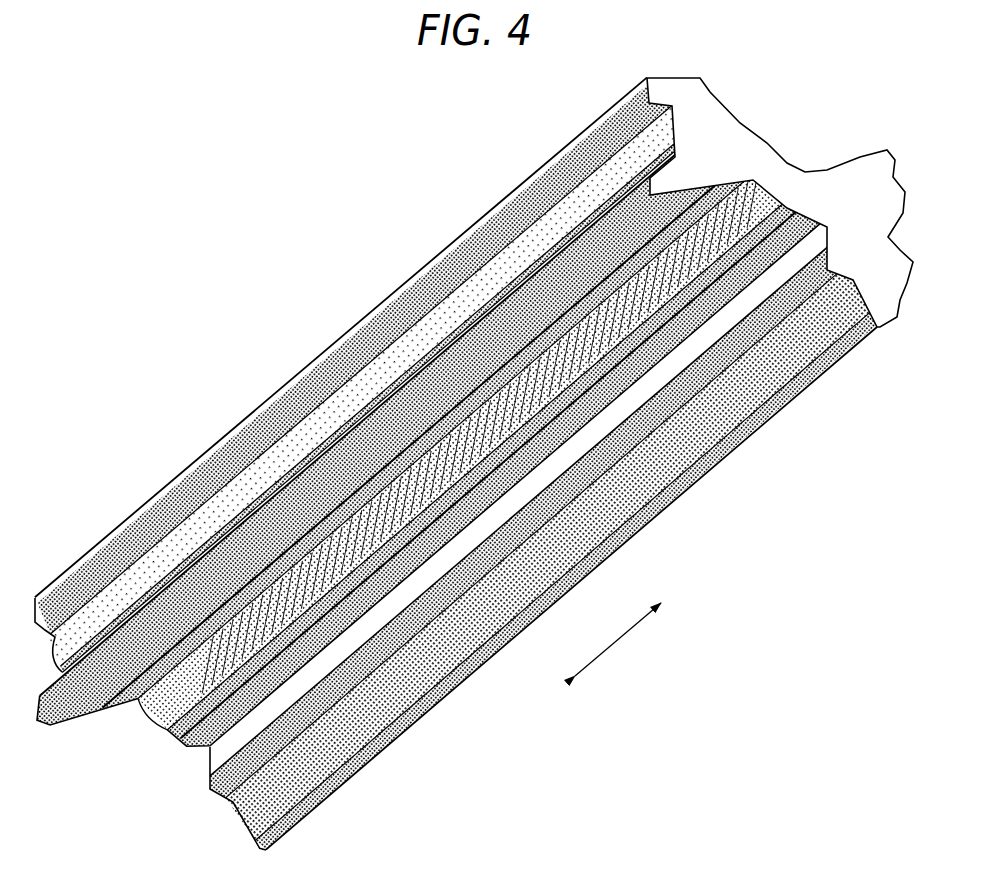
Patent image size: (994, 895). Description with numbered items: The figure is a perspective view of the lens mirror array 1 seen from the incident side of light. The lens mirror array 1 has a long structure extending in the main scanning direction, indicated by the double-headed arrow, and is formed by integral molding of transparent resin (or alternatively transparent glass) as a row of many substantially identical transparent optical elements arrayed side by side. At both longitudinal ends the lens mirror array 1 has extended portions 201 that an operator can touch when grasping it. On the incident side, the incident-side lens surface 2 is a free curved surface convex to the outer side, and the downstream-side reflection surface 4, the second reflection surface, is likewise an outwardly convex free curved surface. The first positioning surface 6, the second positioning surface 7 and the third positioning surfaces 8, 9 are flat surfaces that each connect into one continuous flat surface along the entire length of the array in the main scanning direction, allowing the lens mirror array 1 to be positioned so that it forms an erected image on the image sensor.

The lens mirror array 1 is at (302, 258).
The incident-side lens surface 2 is at (158, 565).
The downstream-side reflection surface 4 is at (300, 607).
The first positioning surface 6 is at (598, 280).
The second positioning surface 7 is at (688, 338).
The third positioning surface 8 is at (268, 505).
The third positioning surface 9 is at (450, 575).
The extended portion 201 is at (80, 573).